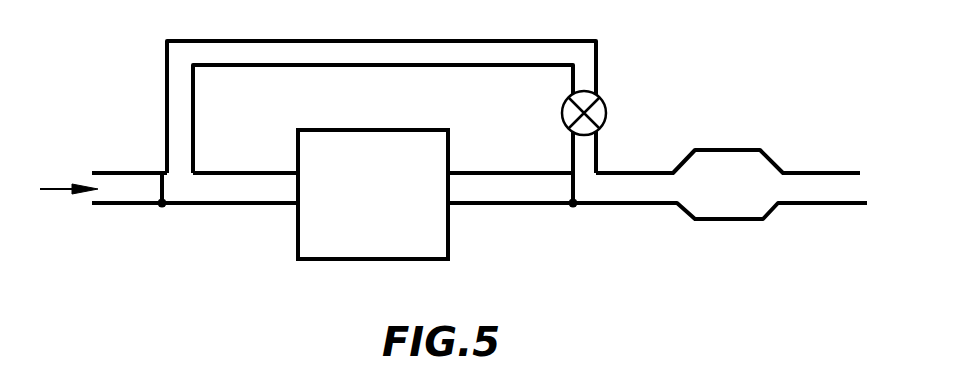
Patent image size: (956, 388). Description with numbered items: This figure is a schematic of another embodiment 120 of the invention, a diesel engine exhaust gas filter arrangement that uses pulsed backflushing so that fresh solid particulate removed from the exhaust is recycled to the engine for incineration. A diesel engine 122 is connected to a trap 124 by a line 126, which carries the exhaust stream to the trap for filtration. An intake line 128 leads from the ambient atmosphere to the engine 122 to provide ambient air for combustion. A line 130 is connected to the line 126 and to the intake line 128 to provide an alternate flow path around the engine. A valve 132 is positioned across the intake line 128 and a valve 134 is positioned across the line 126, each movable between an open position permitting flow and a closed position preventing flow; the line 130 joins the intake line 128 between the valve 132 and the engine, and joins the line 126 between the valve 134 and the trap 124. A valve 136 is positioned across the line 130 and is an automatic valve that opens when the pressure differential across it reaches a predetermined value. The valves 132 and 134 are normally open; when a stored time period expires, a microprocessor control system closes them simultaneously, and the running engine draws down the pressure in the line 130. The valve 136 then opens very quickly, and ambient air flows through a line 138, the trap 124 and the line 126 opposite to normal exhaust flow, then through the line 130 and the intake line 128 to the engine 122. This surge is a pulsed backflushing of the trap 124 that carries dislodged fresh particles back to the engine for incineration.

The embodiment 120 is at (520, 279).
The diesel engine 122 is at (327, 261).
The trap 124 is at (745, 156).
The line 126 is at (640, 205).
The intake line 128 is at (107, 172).
The line 130 is at (404, 41).
The valve 132 is at (163, 172).
The valve 134 is at (570, 207).
The valve 136 is at (606, 103).
The line 138 is at (821, 176).